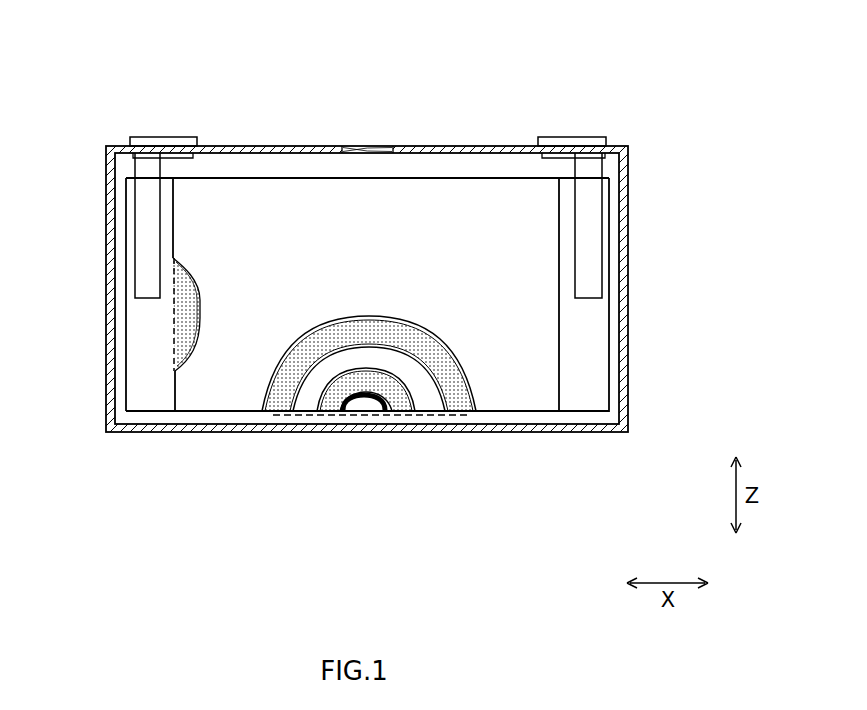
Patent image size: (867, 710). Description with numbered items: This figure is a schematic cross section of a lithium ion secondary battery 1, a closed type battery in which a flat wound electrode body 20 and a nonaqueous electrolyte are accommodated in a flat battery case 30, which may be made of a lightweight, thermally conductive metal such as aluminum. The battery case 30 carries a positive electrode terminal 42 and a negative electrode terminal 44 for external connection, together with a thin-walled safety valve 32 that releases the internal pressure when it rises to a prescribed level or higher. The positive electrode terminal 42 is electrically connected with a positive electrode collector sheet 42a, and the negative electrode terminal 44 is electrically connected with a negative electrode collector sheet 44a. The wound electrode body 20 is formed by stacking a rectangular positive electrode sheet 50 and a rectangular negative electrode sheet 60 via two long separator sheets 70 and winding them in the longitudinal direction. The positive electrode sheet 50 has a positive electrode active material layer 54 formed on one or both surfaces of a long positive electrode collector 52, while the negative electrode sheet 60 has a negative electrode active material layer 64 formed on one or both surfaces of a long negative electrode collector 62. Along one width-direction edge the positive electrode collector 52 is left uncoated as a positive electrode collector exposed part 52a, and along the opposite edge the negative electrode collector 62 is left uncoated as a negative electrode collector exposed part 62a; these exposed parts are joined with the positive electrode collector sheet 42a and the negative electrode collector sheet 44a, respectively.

The lithium ion secondary battery 1 is at (646, 72).
The wound electrode body 20 is at (290, 174).
The battery case 30 is at (632, 257).
The safety valve 32 is at (377, 145).
The positive electrode terminal 42 is at (173, 136).
The positive electrode collector sheet 42a is at (142, 216).
The negative electrode terminal 44 is at (588, 136).
The negative electrode collector sheet 44a is at (597, 213).
The positive electrode sheet 50 is at (278, 413).
The positive electrode collector 52 is at (121, 323).
The positive electrode collector exposed part 52a is at (133, 362).
The positive electrode active material layer 54 is at (201, 296).
The negative electrode sheet 60 is at (330, 407).
The negative electrode collector 62 is at (612, 323).
The negative electrode collector exposed part 62a is at (597, 360).
The negative electrode active material layer 64 is at (365, 445).
The separator sheet 70 is at (212, 372).